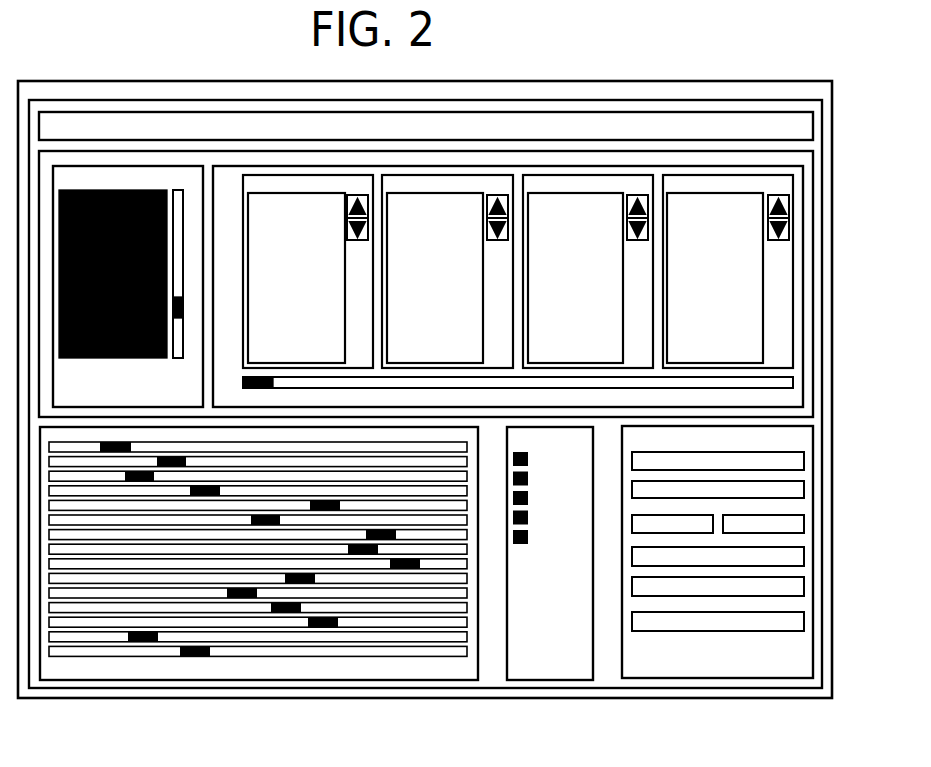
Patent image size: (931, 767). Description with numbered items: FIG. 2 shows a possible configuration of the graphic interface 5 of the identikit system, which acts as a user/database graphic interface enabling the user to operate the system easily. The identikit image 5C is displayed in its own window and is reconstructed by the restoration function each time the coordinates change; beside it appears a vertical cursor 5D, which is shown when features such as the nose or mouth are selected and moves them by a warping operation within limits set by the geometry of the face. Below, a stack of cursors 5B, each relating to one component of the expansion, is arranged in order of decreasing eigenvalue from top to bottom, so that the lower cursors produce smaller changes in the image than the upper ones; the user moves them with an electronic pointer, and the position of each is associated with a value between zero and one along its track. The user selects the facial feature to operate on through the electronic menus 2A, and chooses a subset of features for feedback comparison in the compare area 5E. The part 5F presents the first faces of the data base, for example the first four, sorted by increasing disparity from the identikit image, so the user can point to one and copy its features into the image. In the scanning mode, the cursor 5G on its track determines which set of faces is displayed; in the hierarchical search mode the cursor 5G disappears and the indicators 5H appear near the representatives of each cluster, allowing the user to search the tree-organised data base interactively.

The interface 5 is at (780, 81).
The image 5C is at (81, 190).
The vertical cursor 5D is at (180, 217).
The cursors 5B is at (43, 455).
The part presenting the first faces 5F is at (517, 169).
The indicators 5H is at (347, 223).
The cursor 5G is at (733, 381).
The feature selection area 5E is at (566, 665).
The menus 2A is at (792, 665).